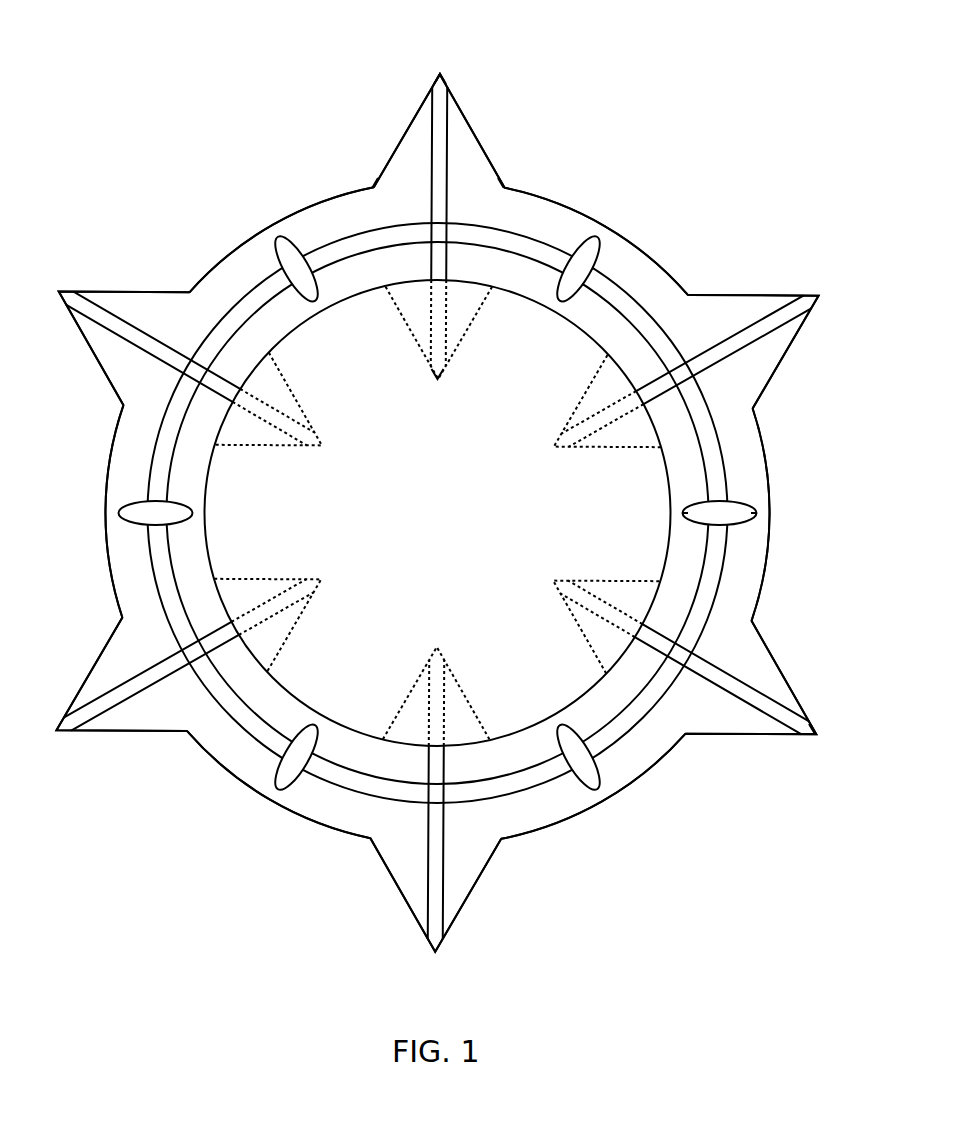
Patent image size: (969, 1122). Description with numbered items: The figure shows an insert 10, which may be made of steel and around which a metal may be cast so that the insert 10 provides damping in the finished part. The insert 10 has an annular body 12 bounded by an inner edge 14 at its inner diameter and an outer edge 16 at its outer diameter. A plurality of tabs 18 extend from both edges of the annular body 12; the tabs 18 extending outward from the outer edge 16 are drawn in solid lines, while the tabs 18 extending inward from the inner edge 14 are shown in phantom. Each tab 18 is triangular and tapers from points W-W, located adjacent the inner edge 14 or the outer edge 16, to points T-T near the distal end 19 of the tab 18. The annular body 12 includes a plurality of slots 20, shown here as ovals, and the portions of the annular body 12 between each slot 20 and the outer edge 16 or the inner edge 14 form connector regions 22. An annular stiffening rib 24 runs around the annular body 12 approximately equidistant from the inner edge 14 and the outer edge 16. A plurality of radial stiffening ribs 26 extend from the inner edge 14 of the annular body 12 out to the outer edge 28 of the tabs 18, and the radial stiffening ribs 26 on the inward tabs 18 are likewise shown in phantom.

The insert 10 is at (158, 90).
The annular body 12 is at (560, 220).
The inner edge 14 is at (590, 337).
The outer edge 16 is at (675, 273).
The tabs 18 is at (468, 135).
The distal end 19 is at (437, 66).
The slots 20 is at (748, 508).
The connector regions 22 is at (674, 514).
The annular stiffening rib 24 is at (718, 588).
The radial stiffening ribs 26 is at (755, 688).
The outer edge of the tabs 28 is at (815, 731).
The points W- W is at (376, 180).
The points T- T is at (437, 82).